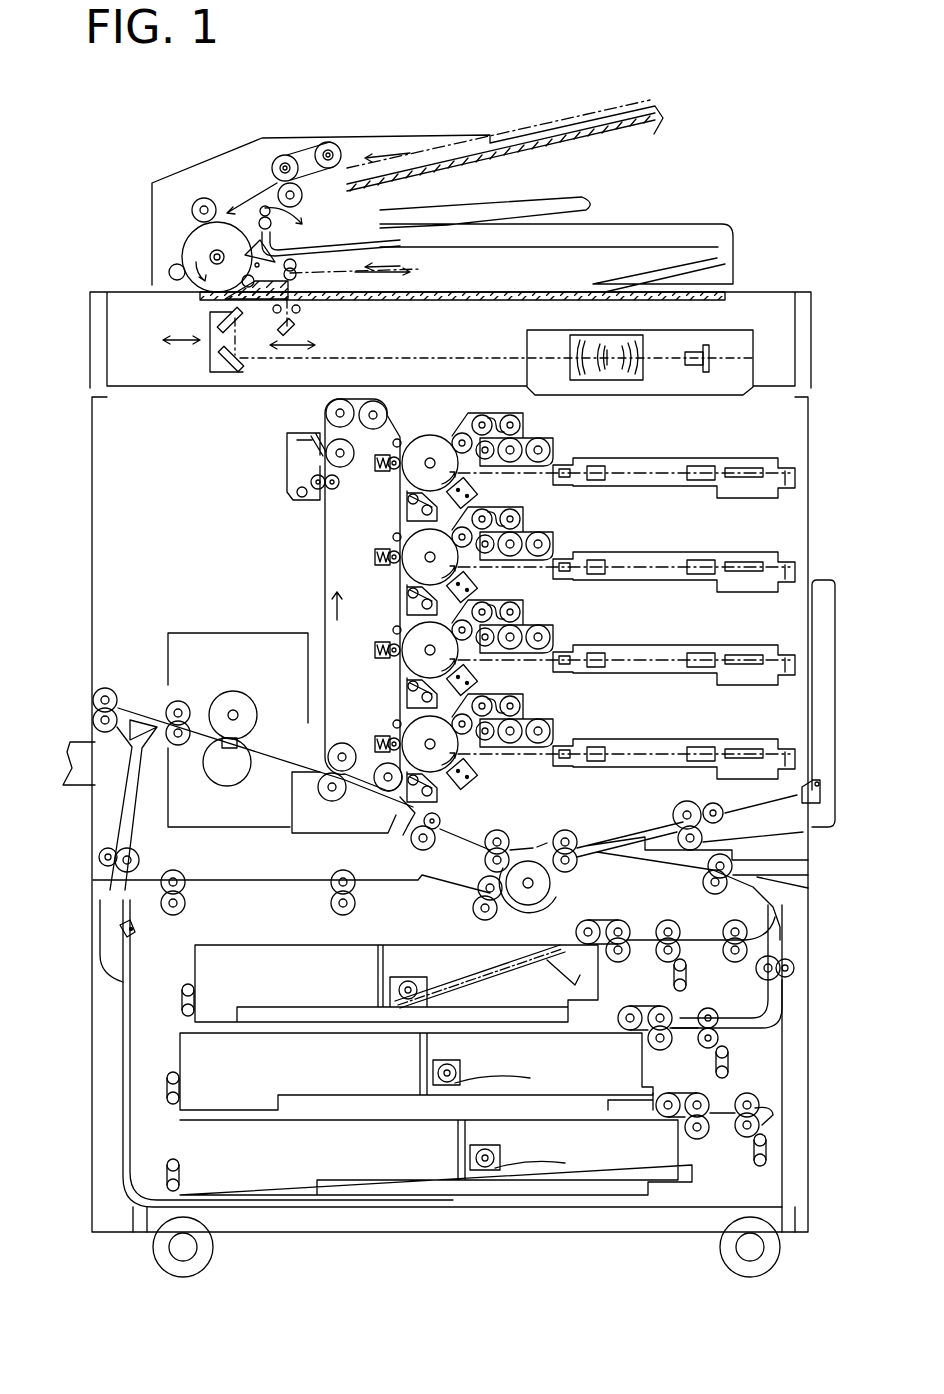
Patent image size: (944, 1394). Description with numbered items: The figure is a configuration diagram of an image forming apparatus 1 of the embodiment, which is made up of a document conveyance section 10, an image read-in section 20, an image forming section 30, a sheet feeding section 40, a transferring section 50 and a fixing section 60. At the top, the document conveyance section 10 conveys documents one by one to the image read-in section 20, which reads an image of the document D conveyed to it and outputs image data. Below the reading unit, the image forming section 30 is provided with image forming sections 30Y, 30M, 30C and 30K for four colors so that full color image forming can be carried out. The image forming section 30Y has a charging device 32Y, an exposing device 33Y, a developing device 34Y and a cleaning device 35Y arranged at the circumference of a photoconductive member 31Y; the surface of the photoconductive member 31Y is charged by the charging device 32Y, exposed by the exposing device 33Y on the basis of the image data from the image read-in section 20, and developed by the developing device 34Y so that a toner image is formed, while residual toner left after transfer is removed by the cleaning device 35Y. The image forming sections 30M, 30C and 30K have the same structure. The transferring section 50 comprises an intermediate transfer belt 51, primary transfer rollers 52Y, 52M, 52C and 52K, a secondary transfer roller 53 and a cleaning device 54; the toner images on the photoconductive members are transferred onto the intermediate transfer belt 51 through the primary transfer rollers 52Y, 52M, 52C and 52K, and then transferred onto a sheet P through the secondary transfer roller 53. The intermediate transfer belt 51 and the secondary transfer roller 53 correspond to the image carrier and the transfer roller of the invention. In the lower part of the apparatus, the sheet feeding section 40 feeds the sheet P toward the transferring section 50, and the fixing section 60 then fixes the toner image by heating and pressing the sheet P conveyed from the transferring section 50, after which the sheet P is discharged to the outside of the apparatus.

The image forming apparatus 1 is at (427, 93).
The document conveyance section 10 is at (695, 158).
The image read-in section 20 is at (776, 281).
The image forming section 30 is at (679, 444).
The image forming section 30Y is at (539, 428).
The image forming section 30M is at (555, 520).
The image forming section 30C is at (552, 614).
The image forming section 30K is at (550, 708).
The photoconductive member 31Y is at (428, 447).
The charging device 32Y is at (472, 489).
The exposing device 33Y is at (672, 492).
The developing device 34Y is at (449, 432).
The cleaning device 35Y is at (407, 516).
The sheet feeding section 40 is at (186, 968).
The transferring section 50 is at (239, 509).
The intermediate transfer belt 51 is at (324, 522).
The primary transfer roller 52Y is at (378, 470).
The primary transfer roller 52M is at (384, 566).
The primary transfer roller 52C is at (380, 656).
The primary transfer roller 52K is at (380, 742).
The secondary transfer roller 53 is at (345, 799).
The cleaning device 54 is at (290, 470).
The fixing section 60 is at (242, 623).
The document D is at (512, 136).
The sheet P is at (508, 903).